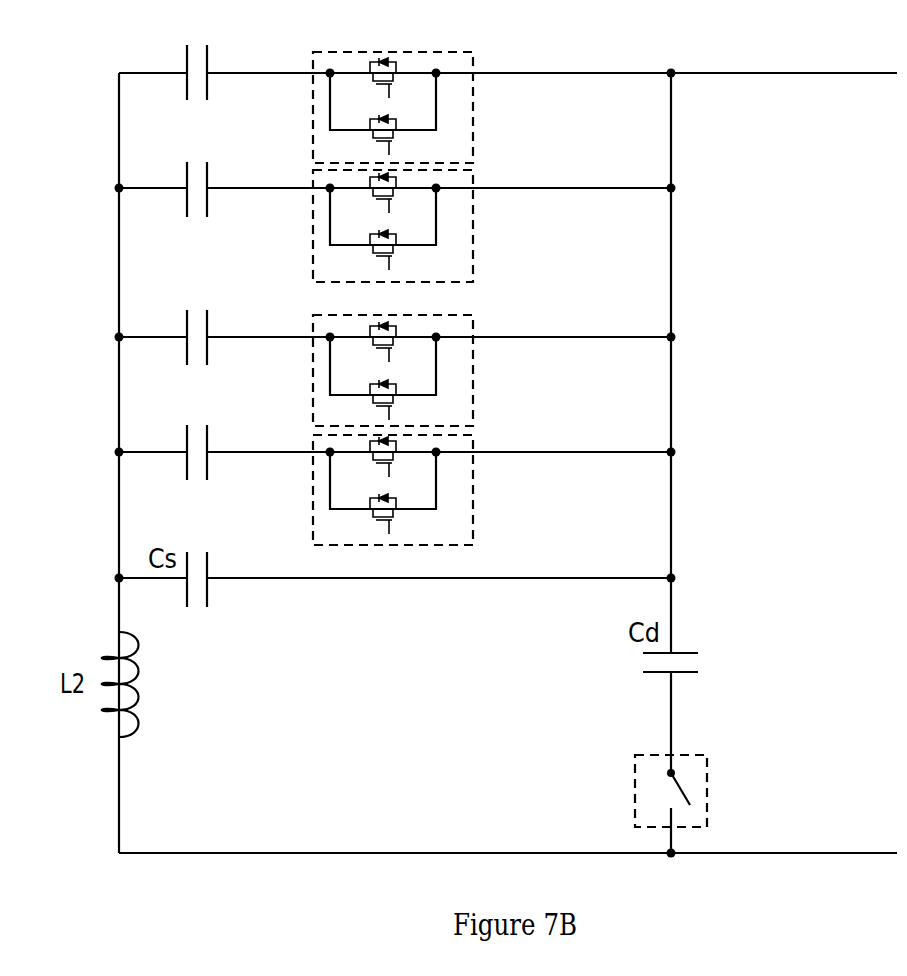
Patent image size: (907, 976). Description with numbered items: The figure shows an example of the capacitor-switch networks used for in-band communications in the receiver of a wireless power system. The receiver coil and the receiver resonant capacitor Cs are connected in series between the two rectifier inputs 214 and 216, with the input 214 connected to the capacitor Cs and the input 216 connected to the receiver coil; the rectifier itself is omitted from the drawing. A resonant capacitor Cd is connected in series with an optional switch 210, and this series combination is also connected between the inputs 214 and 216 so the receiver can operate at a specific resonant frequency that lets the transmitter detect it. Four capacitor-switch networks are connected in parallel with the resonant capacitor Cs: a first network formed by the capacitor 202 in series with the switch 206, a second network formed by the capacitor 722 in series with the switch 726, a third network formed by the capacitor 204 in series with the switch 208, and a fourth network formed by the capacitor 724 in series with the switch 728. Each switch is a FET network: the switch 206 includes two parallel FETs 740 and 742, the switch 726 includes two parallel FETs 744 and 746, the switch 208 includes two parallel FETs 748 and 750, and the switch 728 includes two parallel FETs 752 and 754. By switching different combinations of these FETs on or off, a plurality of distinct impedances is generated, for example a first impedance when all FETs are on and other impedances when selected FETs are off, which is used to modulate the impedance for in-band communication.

The capacitor 202 is at (208, 70).
The capacitor 204 is at (208, 333).
The switch 206 is at (313, 80).
The switch 208 is at (313, 370).
The switch 210 is at (657, 755).
The input 214 is at (795, 73).
The input 216 is at (805, 853).
The capacitor 722 is at (185, 188).
The capacitor 724 is at (185, 452).
The switch 726 is at (313, 218).
The switch 728 is at (313, 490).
The FET 740 is at (396, 67).
The FET 742 is at (396, 124).
The FET 744 is at (396, 182).
The FET 746 is at (396, 239).
The FET 748 is at (396, 331).
The FET 750 is at (396, 389).
The FET 752 is at (396, 446).
The FET 754 is at (396, 503).